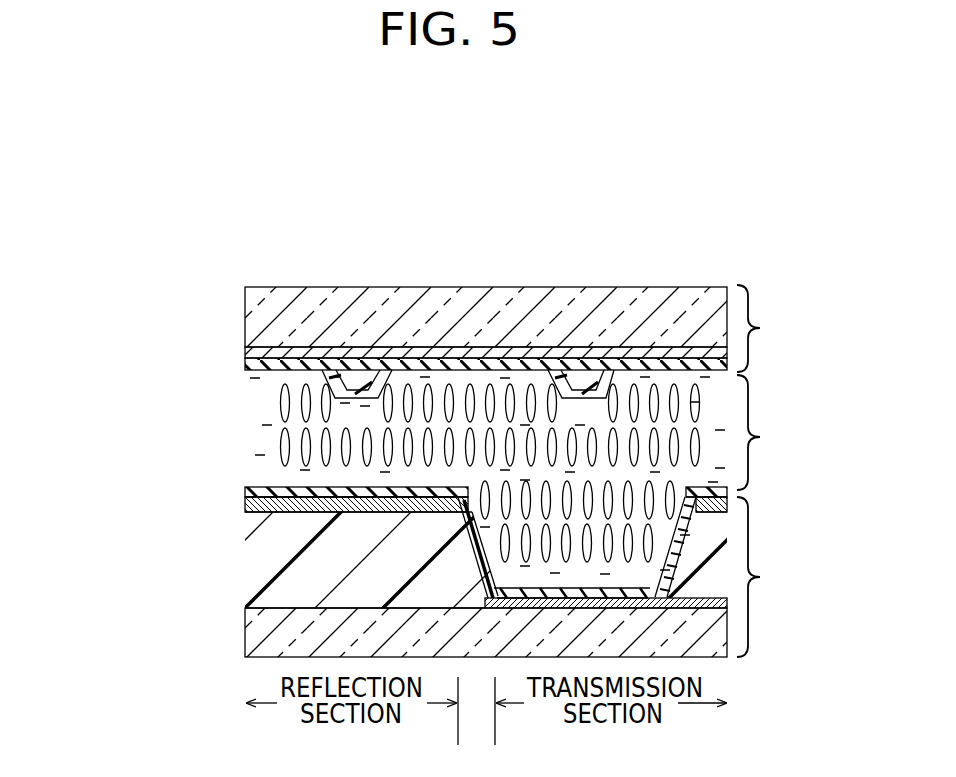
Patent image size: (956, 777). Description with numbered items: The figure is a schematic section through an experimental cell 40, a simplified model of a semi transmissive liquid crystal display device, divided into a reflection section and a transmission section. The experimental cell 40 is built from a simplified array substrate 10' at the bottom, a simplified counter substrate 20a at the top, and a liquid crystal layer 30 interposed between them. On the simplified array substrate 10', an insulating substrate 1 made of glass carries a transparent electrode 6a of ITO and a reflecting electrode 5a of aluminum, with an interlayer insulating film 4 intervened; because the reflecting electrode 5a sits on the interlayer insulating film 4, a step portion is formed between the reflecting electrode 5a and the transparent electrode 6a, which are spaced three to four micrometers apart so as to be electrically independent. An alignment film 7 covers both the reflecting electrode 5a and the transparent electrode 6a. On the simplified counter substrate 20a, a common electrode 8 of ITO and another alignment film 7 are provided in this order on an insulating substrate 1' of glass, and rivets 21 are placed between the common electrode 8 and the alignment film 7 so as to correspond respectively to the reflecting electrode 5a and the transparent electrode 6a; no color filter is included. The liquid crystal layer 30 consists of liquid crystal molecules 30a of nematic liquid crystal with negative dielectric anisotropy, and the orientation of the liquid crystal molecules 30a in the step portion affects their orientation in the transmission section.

The experimental cell 40 is at (303, 252).
The insulating substrate 1' is at (416, 298).
The common electrode 8 is at (247, 355).
The alignment film 7 is at (247, 366).
The rivets 21 is at (583, 372).
The liquid crystal molecules 30a is at (280, 433).
The reflecting electrode 5a is at (245, 505).
The interlayer insulating film 4 is at (267, 567).
The insulating substrate 1 is at (392, 639).
The transparent electrode 6a is at (648, 608).
The simplified counter substrate 20a is at (788, 328).
The liquid crystal layer 30 is at (778, 432).
The simplified array substrate 10' is at (779, 577).